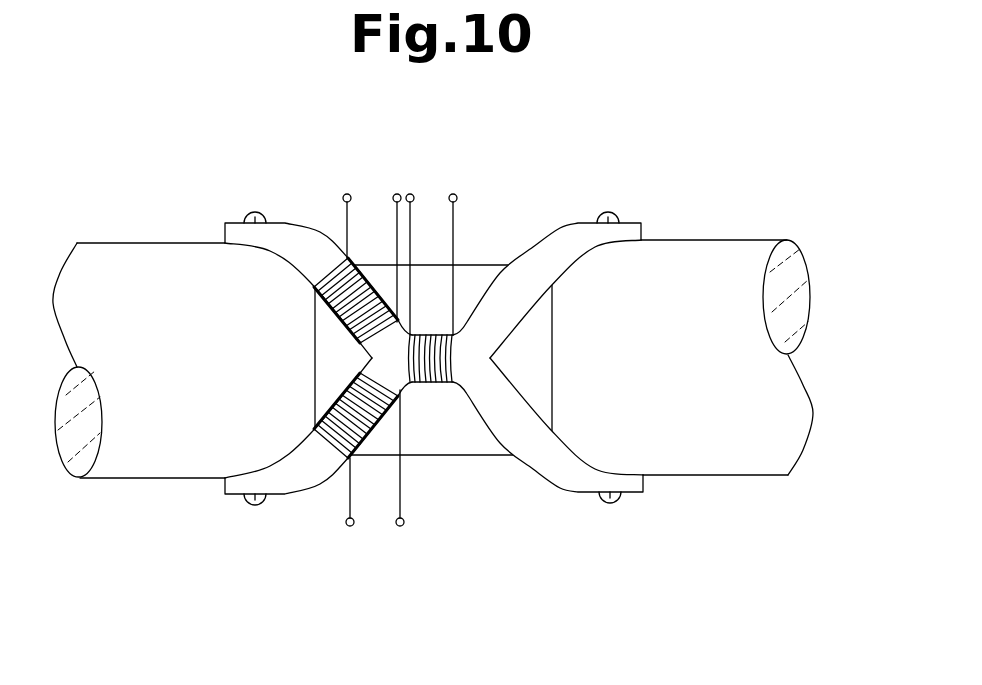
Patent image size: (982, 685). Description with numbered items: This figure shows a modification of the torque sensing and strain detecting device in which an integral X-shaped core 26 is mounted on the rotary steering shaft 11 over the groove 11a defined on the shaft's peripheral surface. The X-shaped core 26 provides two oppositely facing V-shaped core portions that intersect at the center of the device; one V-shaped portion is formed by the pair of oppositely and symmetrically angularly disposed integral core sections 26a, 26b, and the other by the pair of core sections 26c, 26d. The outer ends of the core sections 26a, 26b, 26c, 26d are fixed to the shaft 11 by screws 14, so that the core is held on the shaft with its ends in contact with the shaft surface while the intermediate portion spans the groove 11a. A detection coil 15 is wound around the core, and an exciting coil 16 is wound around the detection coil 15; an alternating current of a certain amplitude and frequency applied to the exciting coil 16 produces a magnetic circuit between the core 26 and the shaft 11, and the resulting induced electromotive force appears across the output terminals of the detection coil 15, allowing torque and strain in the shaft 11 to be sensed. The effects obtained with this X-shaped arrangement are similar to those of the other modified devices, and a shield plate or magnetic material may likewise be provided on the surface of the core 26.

The steering shaft 11 is at (730, 250).
The groove 11a is at (460, 457).
The screw 14 is at (245, 214).
The detection coil 15 is at (332, 317).
The exciting coil 16 is at (433, 385).
The X-shaped core 26 is at (434, 356).
The core section 26a is at (303, 245).
The core section 26b is at (308, 478).
The core section 26c is at (562, 243).
The core section 26d is at (552, 468).